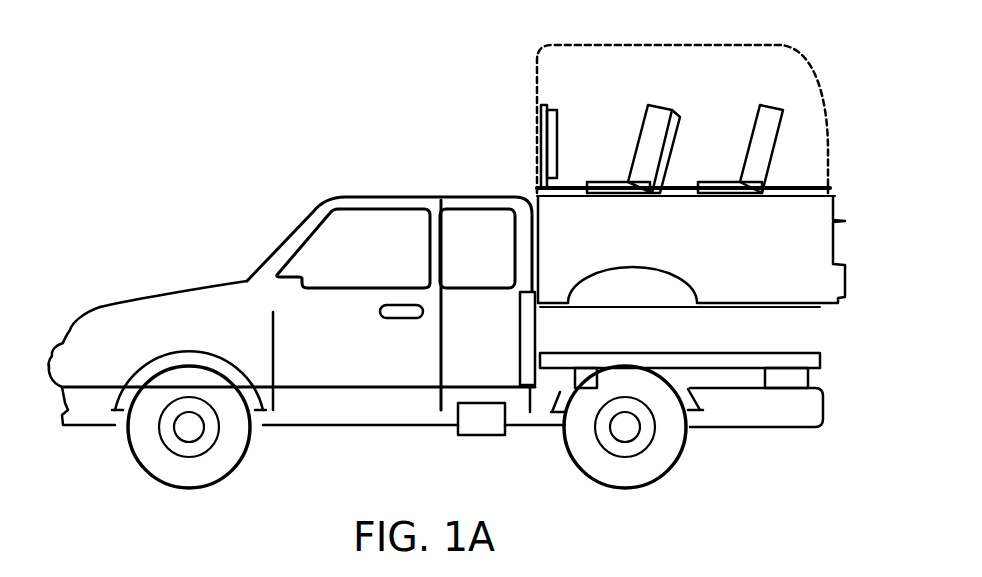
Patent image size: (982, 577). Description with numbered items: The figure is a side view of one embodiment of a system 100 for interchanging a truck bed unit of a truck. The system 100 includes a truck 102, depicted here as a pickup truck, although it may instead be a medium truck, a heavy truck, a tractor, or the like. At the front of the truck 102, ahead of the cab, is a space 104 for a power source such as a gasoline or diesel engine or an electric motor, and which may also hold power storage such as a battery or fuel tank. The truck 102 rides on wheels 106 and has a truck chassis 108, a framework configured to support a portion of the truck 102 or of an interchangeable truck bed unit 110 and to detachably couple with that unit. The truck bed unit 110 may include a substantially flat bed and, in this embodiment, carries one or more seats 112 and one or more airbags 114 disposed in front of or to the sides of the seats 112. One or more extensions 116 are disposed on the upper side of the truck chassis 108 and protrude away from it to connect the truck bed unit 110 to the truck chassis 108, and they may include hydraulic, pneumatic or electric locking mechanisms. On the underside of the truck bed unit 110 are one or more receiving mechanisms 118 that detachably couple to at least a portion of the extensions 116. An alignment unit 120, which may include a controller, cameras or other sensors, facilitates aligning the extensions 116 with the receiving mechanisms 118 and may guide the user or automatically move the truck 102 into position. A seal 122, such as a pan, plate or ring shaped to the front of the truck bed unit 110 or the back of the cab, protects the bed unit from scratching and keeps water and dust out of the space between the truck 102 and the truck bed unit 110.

The system 100 is at (146, 160).
The truck 102 is at (408, 168).
The space 104 is at (100, 307).
The wheels 106 is at (627, 485).
The truck chassis 108 is at (735, 421).
The truck bed unit 110 is at (830, 200).
The seats 112 is at (658, 112).
The airbags 114 is at (668, 147).
The extensions 116 is at (588, 348).
The receiving mechanisms 118 is at (778, 307).
The alignment unit 120 is at (480, 438).
The seal 122 is at (525, 313).